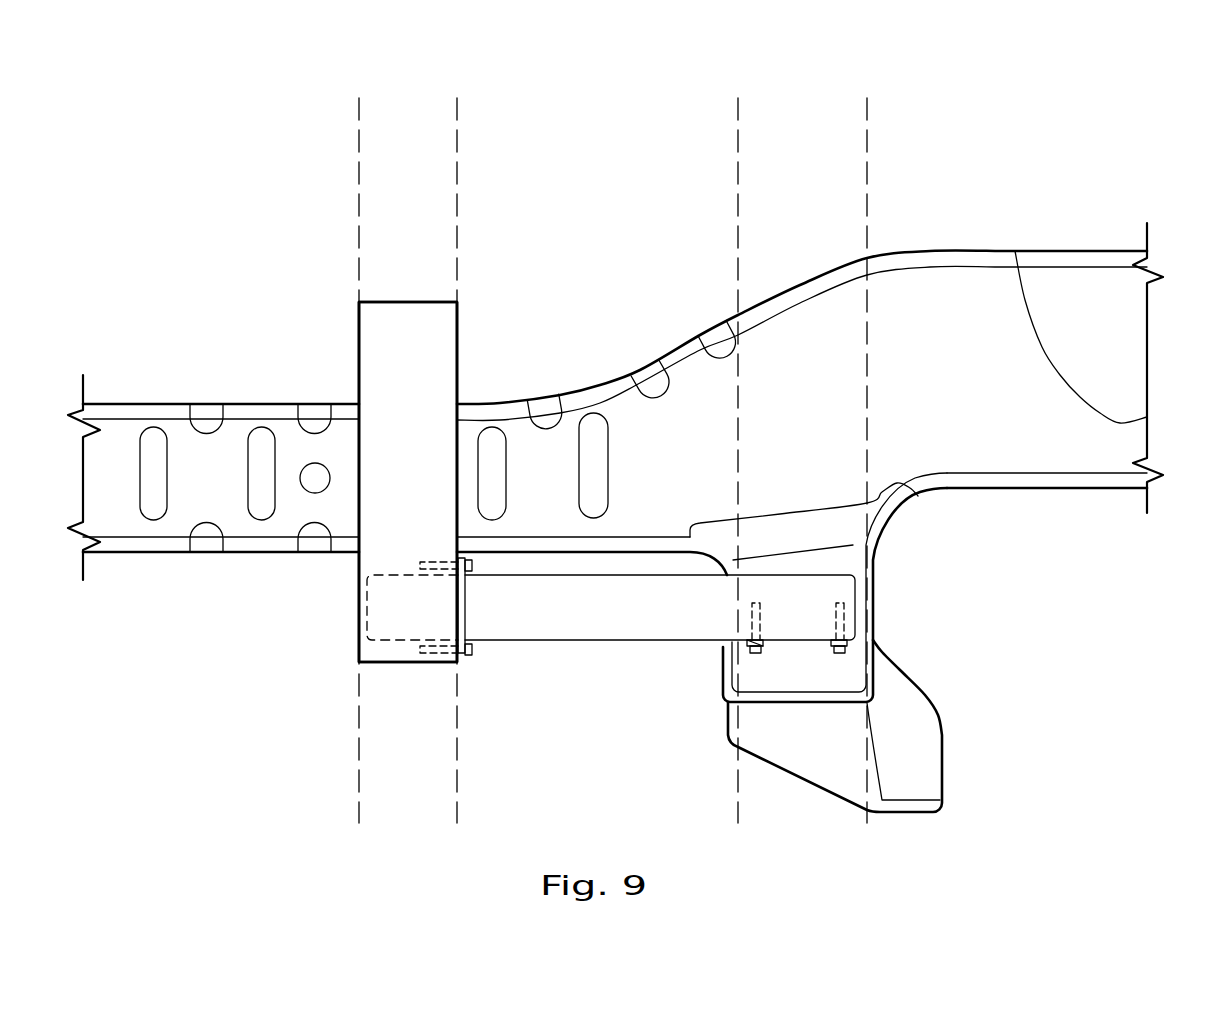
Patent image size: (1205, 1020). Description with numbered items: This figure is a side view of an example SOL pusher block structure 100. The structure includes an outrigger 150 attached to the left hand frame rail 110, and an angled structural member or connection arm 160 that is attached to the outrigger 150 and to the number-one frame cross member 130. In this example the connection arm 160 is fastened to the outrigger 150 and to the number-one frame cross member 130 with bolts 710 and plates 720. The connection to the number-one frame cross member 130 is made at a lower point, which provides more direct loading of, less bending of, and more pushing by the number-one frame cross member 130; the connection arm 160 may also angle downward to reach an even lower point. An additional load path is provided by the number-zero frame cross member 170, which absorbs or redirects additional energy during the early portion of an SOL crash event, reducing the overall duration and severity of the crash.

The SOL pusher block structure 100 is at (1113, 105).
The left hand frame rail 110 is at (978, 252).
The No. 1 frame cross member 130 is at (945, 770).
The outrigger 150 is at (359, 348).
The connection arm 160 is at (612, 640).
The No. 0 frame cross member 170 is at (350, 668).
The bolts 710 is at (472, 565).
The plates 720 is at (465, 608).